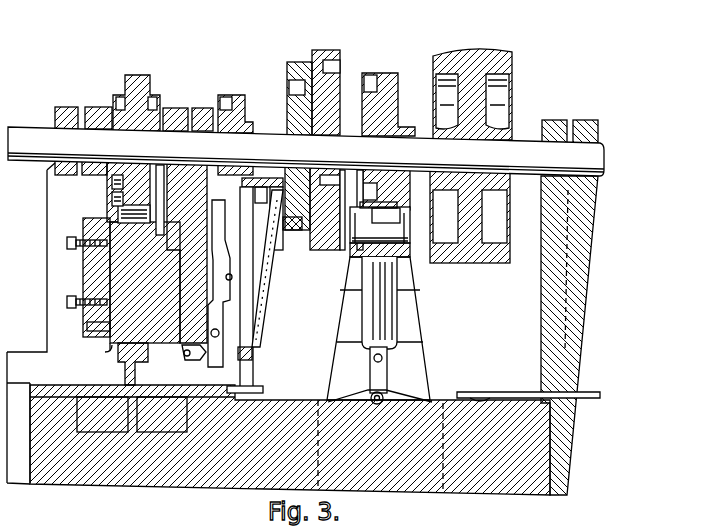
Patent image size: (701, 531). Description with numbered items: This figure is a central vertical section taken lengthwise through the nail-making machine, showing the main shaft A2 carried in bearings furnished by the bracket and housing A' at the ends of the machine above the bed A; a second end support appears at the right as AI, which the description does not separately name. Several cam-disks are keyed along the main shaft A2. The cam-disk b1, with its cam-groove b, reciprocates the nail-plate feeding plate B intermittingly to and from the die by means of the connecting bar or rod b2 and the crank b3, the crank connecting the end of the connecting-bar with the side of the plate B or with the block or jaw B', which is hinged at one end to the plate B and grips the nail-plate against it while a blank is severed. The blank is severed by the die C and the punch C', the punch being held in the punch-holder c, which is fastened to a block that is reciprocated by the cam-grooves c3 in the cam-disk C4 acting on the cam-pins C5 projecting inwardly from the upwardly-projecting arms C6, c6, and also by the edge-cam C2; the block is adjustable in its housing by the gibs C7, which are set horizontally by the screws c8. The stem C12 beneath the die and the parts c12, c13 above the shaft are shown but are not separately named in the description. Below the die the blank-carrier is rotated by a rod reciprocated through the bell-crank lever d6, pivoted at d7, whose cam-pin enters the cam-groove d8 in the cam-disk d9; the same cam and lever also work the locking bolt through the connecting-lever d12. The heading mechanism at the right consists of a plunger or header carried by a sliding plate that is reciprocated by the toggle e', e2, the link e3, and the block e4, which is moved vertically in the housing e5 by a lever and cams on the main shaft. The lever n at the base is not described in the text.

The bed A is at (278, 423).
The frame standard AI is at (600, 215).
The bracket and housing A' is at (79, 132).
The main shaft A2 is at (306, 151).
The die C is at (93, 272).
The punch C' is at (80, 327).
The punch-holder c is at (108, 346).
The edge-cam C2 is at (140, 72).
The cam-grooves c3 is at (115, 102).
The cam-disk C4 is at (152, 94).
The cam-pins C5 is at (110, 182).
The upwardly-projecting arms C6 is at (110, 200).
The gibs C7 is at (82, 270).
The stem C12 is at (122, 366).
The cam-groove b is at (212, 100).
The cam-disk b1 is at (236, 94).
The connecting bar or rod b2 is at (220, 283).
The crank b3 is at (217, 330).
The plate B is at (249, 290).
The block or jaw B' is at (203, 364).
The bell-crank lever d6 is at (268, 303).
The pivot d7 is at (262, 186).
The cam-groove d8 is at (283, 252).
The cam-disk d9 is at (312, 146).
The connecting-lever d12 is at (282, 228).
The upwardly-projecting arms c6 is at (380, 229).
The screws c8 is at (432, 66).
The clutch sleeve c12 is at (352, 60).
The clutch tooth c13 is at (330, 58).
The toggle e' is at (380, 387).
The toggle e2 is at (396, 387).
The link e3 is at (388, 381).
The block e4 is at (360, 262).
The housing e5 is at (420, 316).
The lever n is at (450, 400).